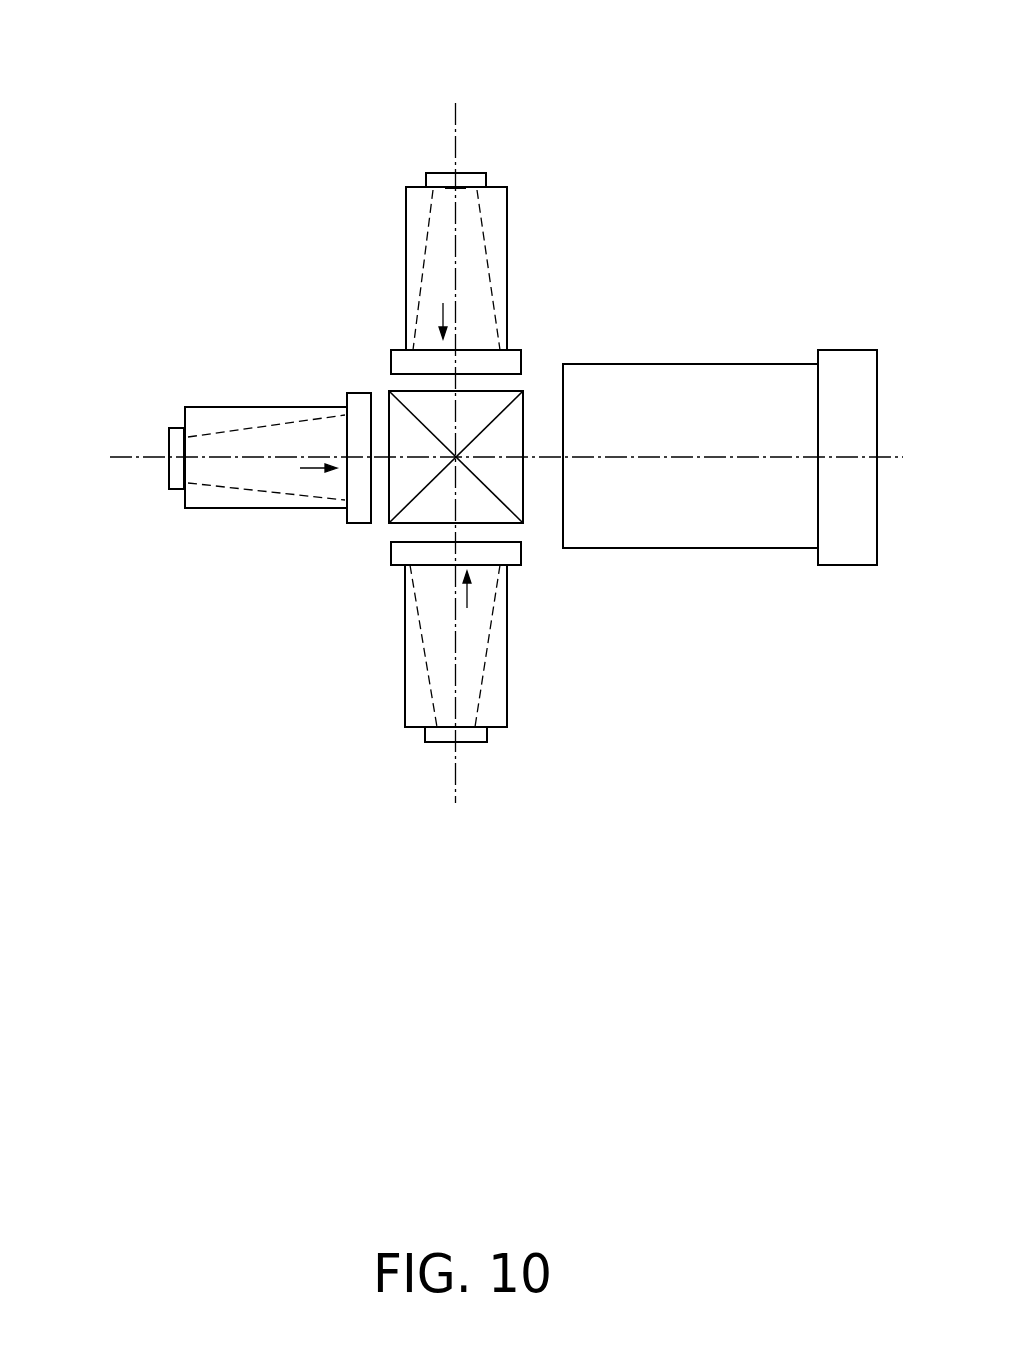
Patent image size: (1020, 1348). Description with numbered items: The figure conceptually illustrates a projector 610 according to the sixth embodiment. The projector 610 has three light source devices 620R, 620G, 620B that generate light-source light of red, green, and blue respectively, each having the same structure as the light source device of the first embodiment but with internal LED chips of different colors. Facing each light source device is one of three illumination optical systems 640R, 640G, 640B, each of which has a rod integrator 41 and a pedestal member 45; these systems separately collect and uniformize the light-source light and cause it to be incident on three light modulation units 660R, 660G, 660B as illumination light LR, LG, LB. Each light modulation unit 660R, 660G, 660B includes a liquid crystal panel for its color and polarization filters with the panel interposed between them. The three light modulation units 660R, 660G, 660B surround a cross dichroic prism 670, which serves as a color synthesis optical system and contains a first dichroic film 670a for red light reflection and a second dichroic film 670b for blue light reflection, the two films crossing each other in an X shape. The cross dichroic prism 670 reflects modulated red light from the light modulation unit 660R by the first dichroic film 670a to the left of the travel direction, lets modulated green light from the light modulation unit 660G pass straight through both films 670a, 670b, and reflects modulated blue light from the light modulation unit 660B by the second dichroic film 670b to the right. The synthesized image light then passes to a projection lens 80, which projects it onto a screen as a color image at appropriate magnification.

The projector 610 is at (777, 27).
The light source device 620R is at (454, 186).
The light source device 620G is at (183, 463).
The light source device 620B is at (465, 732).
The illumination optical system 640R is at (387, 247).
The illumination optical system 640G is at (232, 527).
The illumination optical system 640B is at (517, 685).
The rod integrator 41 is at (497, 247).
The pedestal member 45 is at (487, 182).
The light modulation unit 660R is at (520, 350).
The light modulation unit 660G is at (355, 393).
The light modulation unit 660B is at (388, 563).
The cross dichroic prism 670 is at (520, 520).
The first dichroic film 670a is at (503, 502).
The second dichroic film 670b is at (497, 417).
The projection lens 80 is at (750, 548).
The illumination light LR is at (443, 303).
The illumination light LG is at (313, 468).
The illumination light LB is at (467, 608).